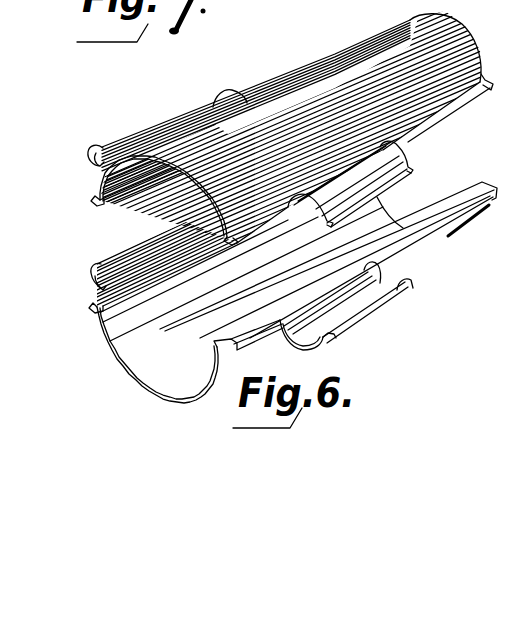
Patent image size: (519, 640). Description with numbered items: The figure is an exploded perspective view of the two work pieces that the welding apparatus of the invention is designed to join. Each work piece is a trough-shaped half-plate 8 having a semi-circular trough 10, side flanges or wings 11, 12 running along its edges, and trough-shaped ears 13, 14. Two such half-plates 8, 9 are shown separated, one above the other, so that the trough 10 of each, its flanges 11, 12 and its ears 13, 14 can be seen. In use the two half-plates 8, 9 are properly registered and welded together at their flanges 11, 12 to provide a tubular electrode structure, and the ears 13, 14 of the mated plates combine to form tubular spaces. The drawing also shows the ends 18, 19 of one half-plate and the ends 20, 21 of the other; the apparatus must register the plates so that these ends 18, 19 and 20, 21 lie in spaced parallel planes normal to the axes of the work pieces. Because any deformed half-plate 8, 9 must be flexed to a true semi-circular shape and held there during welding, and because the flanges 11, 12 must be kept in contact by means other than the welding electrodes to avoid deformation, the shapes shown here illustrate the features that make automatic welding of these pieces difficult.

The half-plate 8 is at (213, 390).
The half-plate 9 is at (302, 122).
The trough 10 is at (200, 170).
The side flange 11 is at (97, 197).
The side flange 12 is at (262, 340).
The trough-shaped ear 13 is at (94, 160).
The trough-shaped ear 14 is at (407, 167).
The end 18 is at (148, 398).
The end 19 is at (180, 167).
The end 20 is at (398, 217).
The end 21 is at (465, 32).